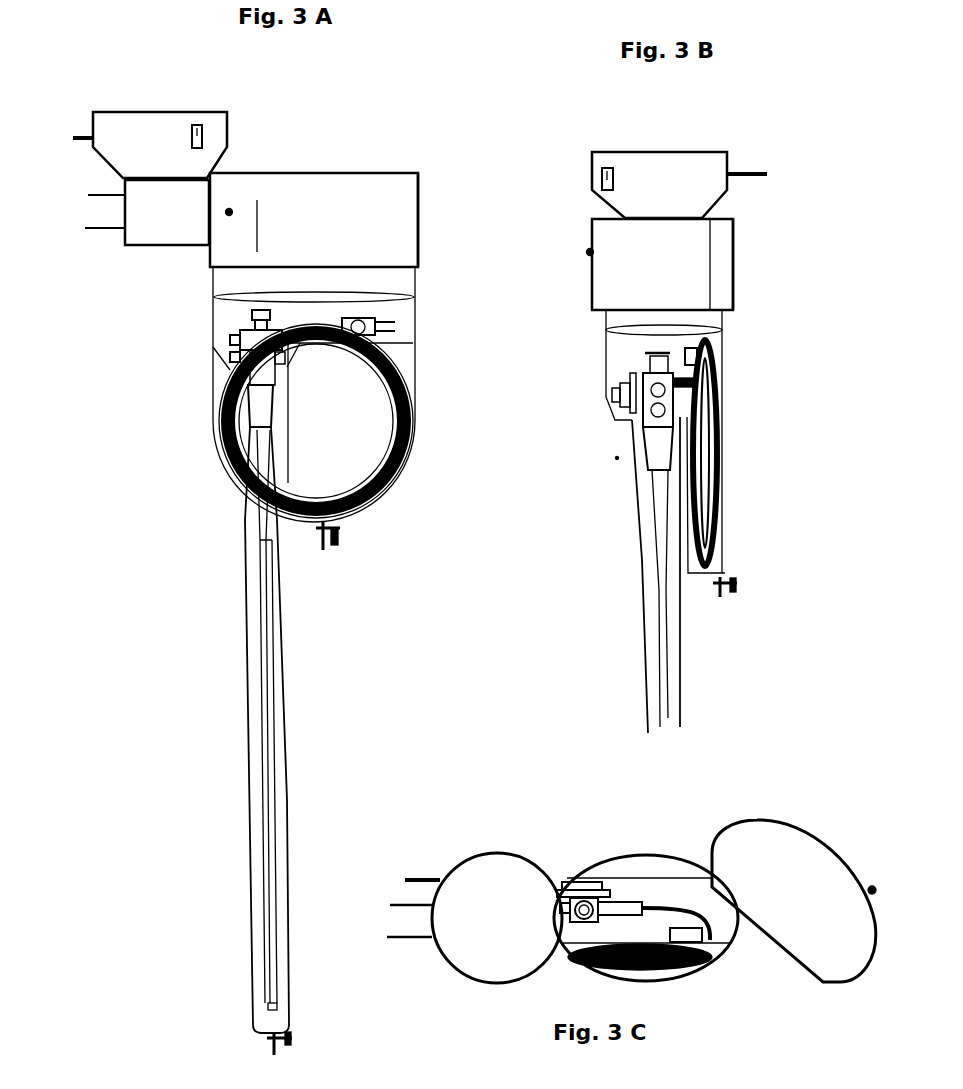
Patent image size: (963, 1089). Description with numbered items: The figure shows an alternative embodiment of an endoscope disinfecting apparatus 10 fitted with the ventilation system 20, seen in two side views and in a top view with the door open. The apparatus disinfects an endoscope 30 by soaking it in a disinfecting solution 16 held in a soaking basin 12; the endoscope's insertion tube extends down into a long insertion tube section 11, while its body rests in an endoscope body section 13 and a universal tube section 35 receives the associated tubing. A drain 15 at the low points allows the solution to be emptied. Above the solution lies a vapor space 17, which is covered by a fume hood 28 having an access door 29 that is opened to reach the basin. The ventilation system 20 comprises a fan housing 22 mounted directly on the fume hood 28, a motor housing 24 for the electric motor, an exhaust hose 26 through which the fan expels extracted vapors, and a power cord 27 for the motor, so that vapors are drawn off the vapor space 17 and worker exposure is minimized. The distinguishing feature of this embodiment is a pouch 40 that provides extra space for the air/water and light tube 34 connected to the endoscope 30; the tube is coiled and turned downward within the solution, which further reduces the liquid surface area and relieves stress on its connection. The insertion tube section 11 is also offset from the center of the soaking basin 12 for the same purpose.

In FIG. 3A, the endoscope disinfecting apparatus 10 is at (189, 457).
In FIG. 3A, the insertion tube section 11 is at (247, 568).
In FIG. 3B, the insertion tube section 11 is at (646, 668).
In FIG. 3A, the soaking basin 12 is at (413, 278).
In FIG. 3B, the endoscope body section 13 is at (617, 458).
In FIG. 3A, the drain 15 is at (345, 548).
In FIG. 3B, the drain 15 is at (732, 598).
In FIG. 3A, the disinfecting solution 16 is at (232, 311).
In FIG. 3B, the disinfecting solution 16 is at (630, 350).
In FIG. 3A, the vapor space 17 is at (257, 252).
In FIG. 3A, the ventilation system 20 is at (365, 123).
In FIG. 3A, the fan housing 22 is at (167, 212).
In FIG. 3A, the motor housing 24 is at (160, 145).
In FIG. 3B, the motor housing 24 is at (659, 185).
In FIG. 3C, the motor housing 24 is at (497, 918).
In FIG. 3A, the exhaust hose 26 is at (107, 207).
In FIG. 3C, the exhaust hose 26 is at (393, 900).
In FIG. 3A, the power cord 27 is at (81, 132).
In FIG. 3B, the power cord 27 is at (750, 168).
In FIG. 3C, the power cord 27 is at (427, 873).
In FIG. 3A, the fume hood 28 is at (437, 223).
In FIG. 3B, the fume hood 28 is at (733, 267).
In FIG. 3C, the fume hood 28 is at (632, 853).
In FIG. 3A, the access door 29 is at (314, 220).
In FIG. 3B, the access door 29 is at (660, 264).
In FIG. 3C, the access door 29 is at (794, 901).
In FIG. 3A, the endoscope 30 is at (233, 393).
In FIG. 3B, the endoscope 30 is at (658, 440).
In FIG. 3A, the air/water and light tube 34 is at (392, 478).
In FIG. 3B, the air/water and light tube 34 is at (718, 433).
In FIG. 3C, the air/water and light tube 34 is at (670, 973).
In FIG. 3B, the universal tube section 35 is at (724, 340).
In FIG. 3A, the pouch 40 is at (417, 365).
In FIG. 3B, the pouch 40 is at (725, 507).